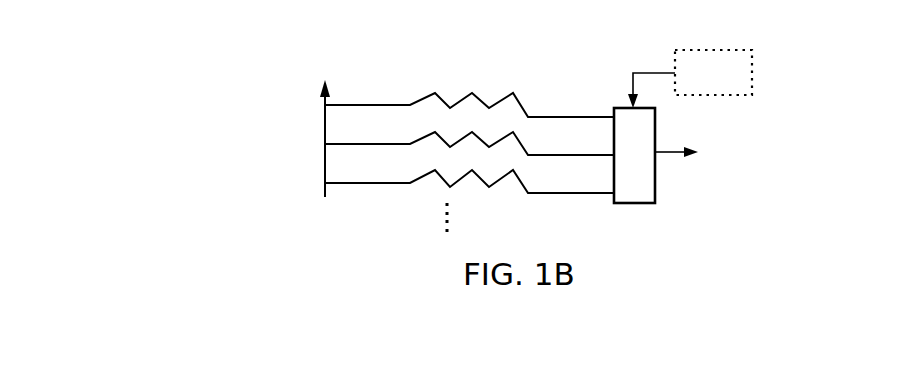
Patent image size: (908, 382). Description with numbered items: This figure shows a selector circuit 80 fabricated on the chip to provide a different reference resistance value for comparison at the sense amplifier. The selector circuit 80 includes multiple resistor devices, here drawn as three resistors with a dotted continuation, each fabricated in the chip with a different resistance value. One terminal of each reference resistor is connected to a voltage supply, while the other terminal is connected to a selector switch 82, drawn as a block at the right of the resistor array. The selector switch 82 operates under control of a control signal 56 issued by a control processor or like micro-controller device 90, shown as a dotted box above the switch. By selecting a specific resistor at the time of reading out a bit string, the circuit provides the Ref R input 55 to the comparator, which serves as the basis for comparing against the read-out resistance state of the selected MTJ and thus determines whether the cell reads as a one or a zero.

The selector circuit 80 is at (282, 131).
The selector switch 82 is at (645, 192).
The micro-controller device 90 is at (753, 73).
The control signal 56 is at (633, 73).
The Ref R input 55 is at (670, 153).